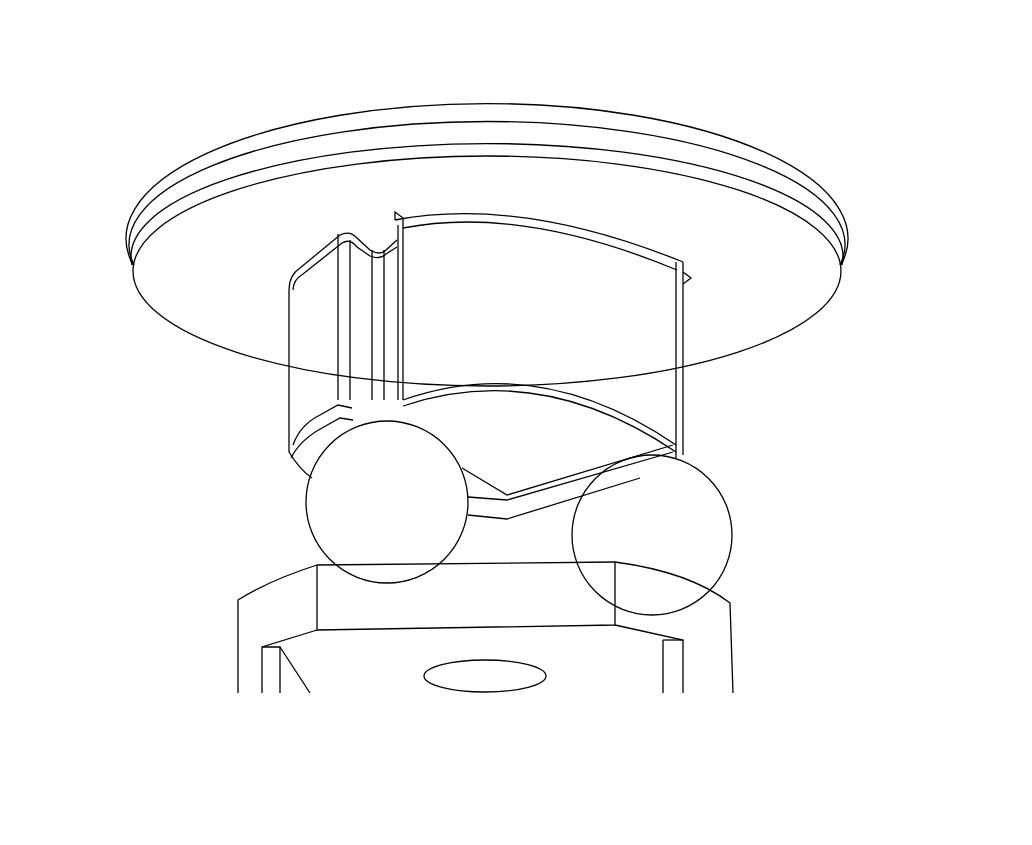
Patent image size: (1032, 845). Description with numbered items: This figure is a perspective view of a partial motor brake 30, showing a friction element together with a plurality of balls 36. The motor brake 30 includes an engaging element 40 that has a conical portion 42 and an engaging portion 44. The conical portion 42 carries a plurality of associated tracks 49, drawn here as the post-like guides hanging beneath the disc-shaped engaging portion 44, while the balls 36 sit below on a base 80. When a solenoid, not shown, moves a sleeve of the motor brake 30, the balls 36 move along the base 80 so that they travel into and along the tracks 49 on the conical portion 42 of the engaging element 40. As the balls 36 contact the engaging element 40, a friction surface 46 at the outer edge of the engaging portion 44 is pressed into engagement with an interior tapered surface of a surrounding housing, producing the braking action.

The motor brake 30 is at (165, 80).
The engaging element 40 is at (802, 352).
The friction surface 46 is at (822, 188).
The engaging portion 44 is at (250, 247).
The conical portion 42 is at (603, 378).
The tracks 49 is at (352, 398).
The balls 36 is at (340, 514).
The base 80 is at (300, 605).